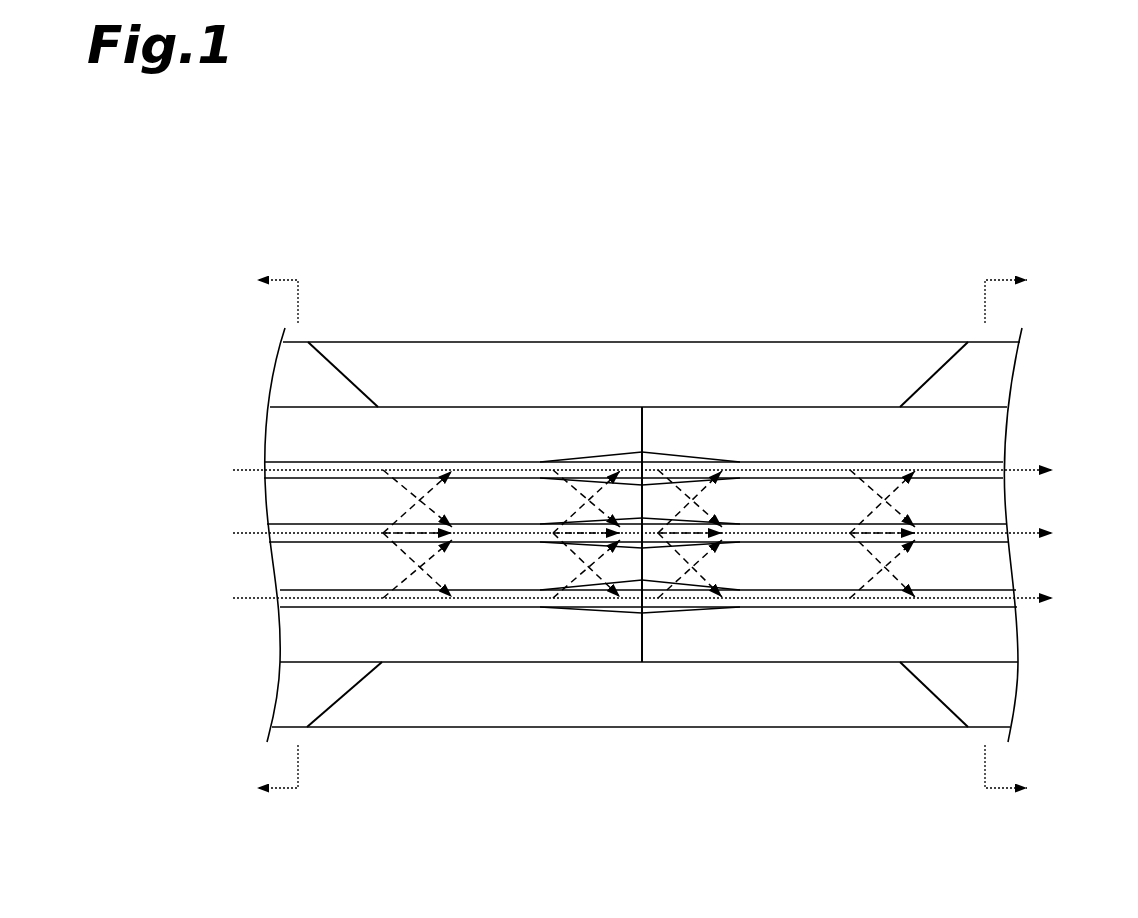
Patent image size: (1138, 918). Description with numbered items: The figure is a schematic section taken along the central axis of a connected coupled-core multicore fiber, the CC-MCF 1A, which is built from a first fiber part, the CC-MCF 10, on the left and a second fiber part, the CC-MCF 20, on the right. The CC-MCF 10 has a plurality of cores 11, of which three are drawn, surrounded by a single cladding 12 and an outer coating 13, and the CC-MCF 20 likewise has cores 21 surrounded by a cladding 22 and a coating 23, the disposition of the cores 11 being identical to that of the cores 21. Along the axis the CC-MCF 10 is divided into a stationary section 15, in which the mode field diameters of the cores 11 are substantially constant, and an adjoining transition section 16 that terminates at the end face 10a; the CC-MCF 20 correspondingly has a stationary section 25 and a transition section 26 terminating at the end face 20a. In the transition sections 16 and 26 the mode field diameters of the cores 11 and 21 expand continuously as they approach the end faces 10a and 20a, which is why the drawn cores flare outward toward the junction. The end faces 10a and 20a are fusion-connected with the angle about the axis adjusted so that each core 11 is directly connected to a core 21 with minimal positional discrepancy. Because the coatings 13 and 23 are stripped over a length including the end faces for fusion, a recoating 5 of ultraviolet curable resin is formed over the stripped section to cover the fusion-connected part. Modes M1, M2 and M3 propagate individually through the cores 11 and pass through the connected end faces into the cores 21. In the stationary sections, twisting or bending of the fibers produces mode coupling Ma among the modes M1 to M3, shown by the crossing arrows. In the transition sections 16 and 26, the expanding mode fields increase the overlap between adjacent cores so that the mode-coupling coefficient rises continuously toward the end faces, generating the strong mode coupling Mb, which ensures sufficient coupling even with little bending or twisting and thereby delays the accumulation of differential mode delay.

The CC-MCF 1A is at (1040, 141).
The recoating 5 is at (772, 358).
The first CC-MCF 10 is at (637, 192).
The second CC-MCF 20 is at (1018, 192).
The stationary section 15 is at (543, 270).
The transition section 16 is at (637, 270).
The transition section 26 is at (738, 268).
The stationary section 25 is at (1018, 268).
The core 11 is at (288, 467).
The cladding 12 is at (270, 418).
The coating 13 is at (273, 366).
The core 21 is at (988, 465).
The cladding 22 is at (1007, 422).
The coating 23 is at (1013, 370).
The end face 10a is at (643, 647).
The end face 20a is at (638, 628).
The mode M1 is at (507, 468).
The mode M2 is at (490, 540).
The mode M3 is at (527, 605).
The mode coupling Ma is at (408, 598).
The mode coupling Mb is at (583, 598).